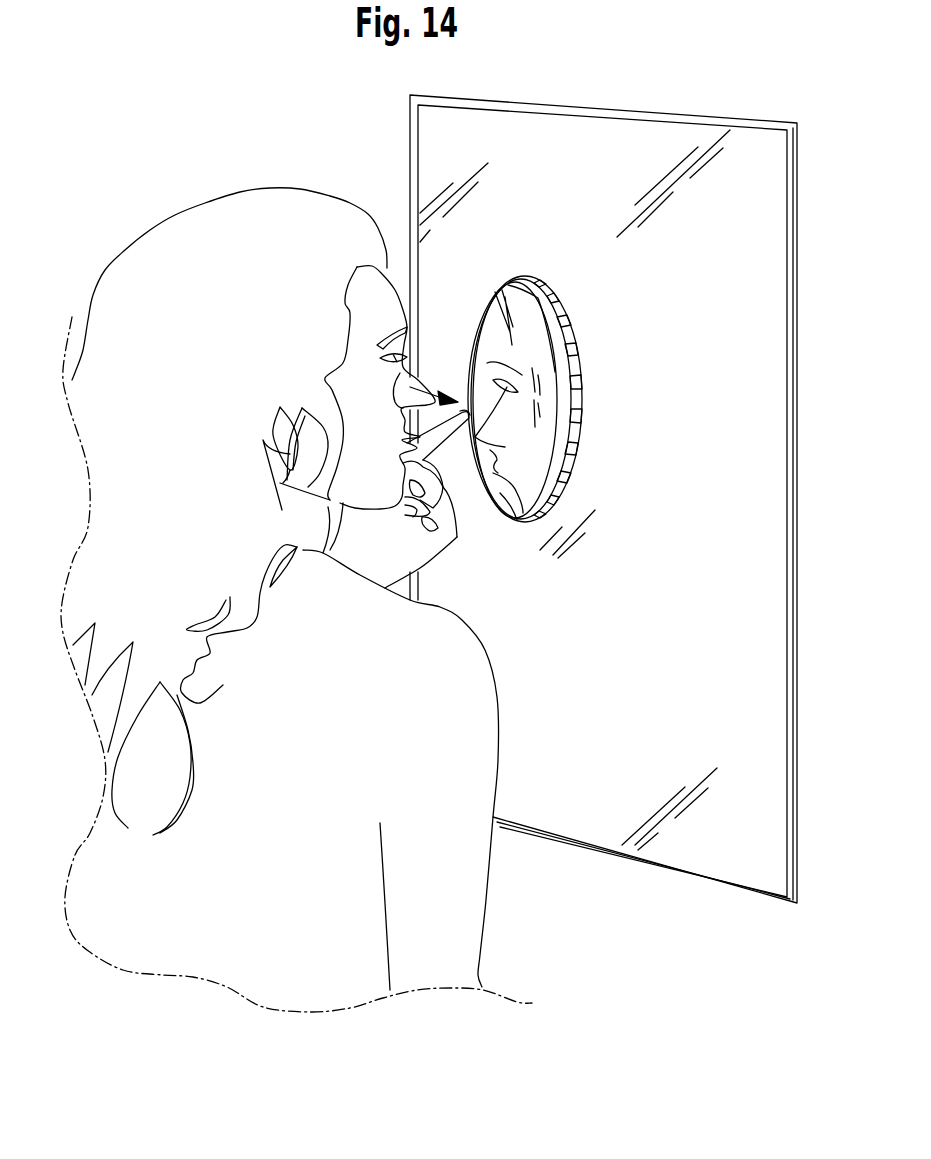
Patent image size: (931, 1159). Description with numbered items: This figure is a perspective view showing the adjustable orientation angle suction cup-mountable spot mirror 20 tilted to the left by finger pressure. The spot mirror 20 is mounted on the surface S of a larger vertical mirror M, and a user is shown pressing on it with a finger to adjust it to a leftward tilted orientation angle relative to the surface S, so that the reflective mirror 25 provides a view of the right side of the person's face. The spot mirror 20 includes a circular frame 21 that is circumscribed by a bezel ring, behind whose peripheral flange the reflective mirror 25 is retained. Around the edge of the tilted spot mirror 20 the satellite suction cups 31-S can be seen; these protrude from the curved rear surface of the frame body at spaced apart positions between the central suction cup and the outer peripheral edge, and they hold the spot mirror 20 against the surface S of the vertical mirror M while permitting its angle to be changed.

The adjustable orientation angle suction cup-mountable spot mirror 20 is at (561, 365).
The circular frame 21 is at (499, 277).
The reflective mirror 25 is at (489, 316).
The satellite suction cups 31-S is at (581, 424).
The larger vertical mirror M is at (711, 451).
The surface S is at (626, 549).